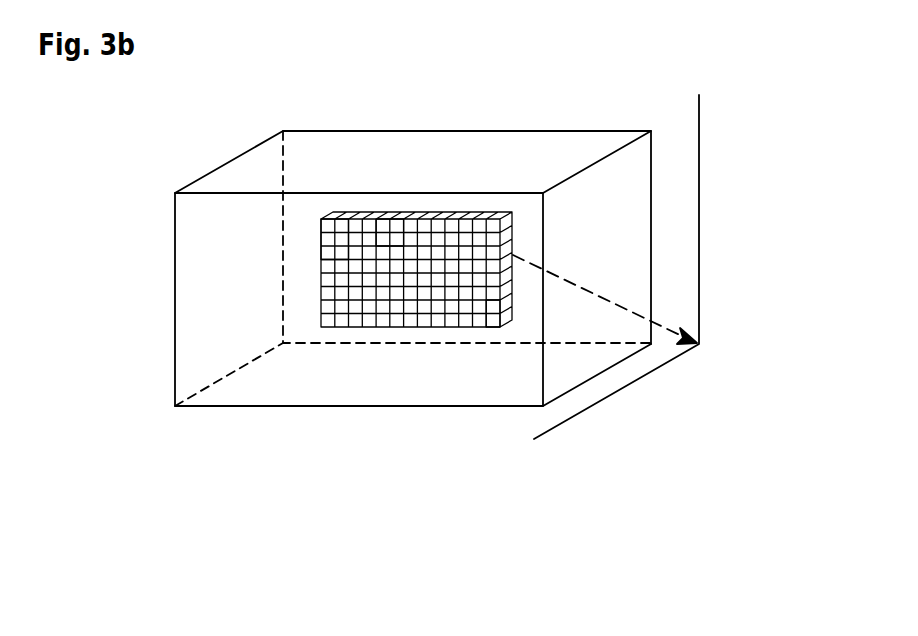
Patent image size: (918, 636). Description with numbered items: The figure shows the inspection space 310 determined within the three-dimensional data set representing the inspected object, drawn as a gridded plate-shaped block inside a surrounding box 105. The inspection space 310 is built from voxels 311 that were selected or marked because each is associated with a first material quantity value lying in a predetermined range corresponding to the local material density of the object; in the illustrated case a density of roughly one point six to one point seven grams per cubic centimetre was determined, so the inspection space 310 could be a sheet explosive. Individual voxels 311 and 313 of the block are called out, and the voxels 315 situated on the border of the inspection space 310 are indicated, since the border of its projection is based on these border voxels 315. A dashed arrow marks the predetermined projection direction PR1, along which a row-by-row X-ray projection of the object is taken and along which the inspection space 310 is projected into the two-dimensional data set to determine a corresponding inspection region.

The space / housing 105 is at (205, 332).
The inspection space 310 is at (397, 320).
The voxels 311 is at (397, 252).
The grid element 313 is at (452, 320).
The voxels situated on the border of the projection 315 is at (323, 253).
The projection direction PR1 is at (596, 293).